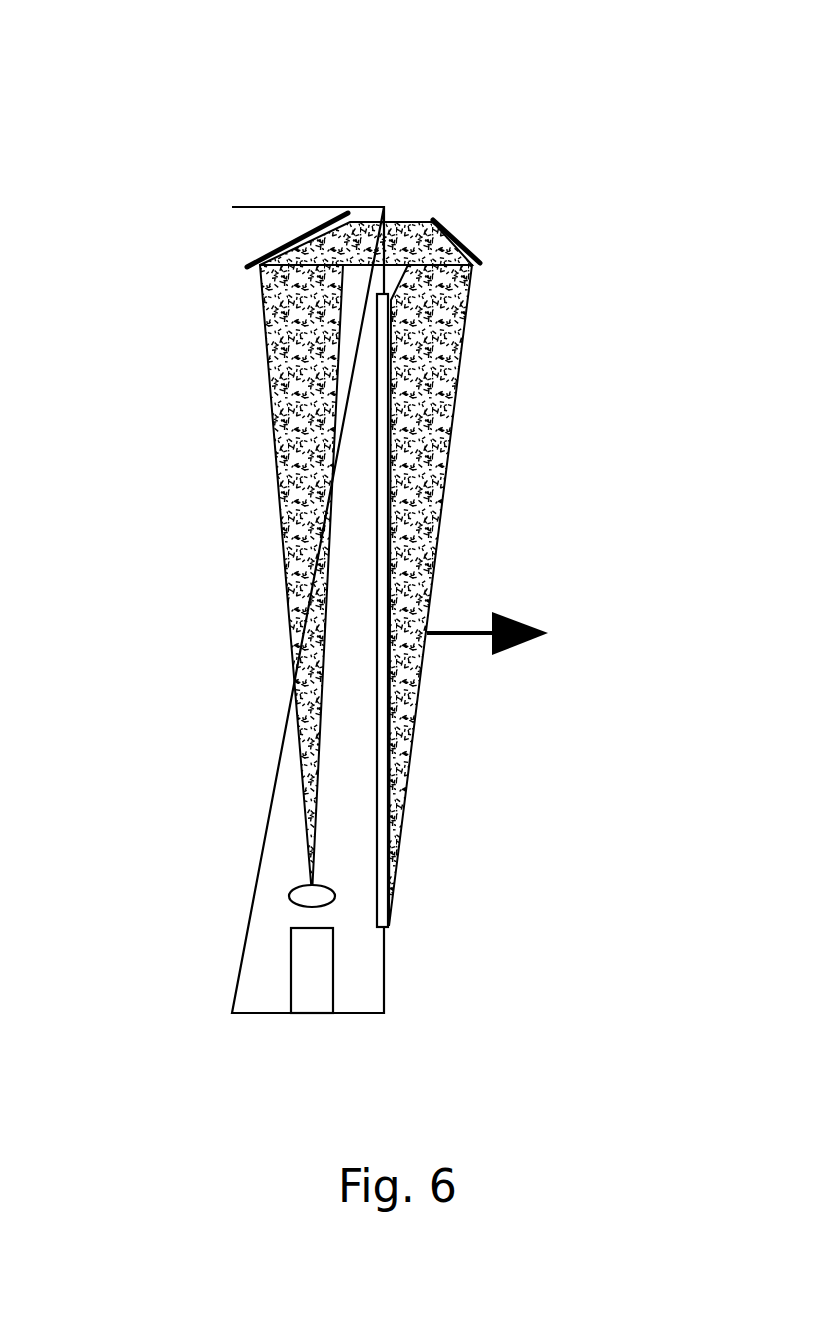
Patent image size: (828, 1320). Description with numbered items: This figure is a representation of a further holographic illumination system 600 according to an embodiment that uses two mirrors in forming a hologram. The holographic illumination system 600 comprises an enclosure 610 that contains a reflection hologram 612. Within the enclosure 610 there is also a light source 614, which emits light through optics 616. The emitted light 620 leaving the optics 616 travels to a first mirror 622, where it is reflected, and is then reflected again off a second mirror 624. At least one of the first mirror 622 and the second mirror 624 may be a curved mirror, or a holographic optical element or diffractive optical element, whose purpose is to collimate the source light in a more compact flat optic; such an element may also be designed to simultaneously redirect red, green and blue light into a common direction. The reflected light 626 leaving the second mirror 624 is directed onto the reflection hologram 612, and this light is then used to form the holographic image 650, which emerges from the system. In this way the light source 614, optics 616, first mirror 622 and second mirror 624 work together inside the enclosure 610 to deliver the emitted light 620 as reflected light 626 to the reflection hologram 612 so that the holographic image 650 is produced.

The holographic illumination system 600 is at (466, 92).
The enclosure 610 is at (231, 325).
The reflection hologram 612 is at (386, 497).
The light source 614 is at (315, 971).
The optics 616 is at (288, 897).
The emitted light 620 is at (297, 672).
The first mirror 622 is at (322, 227).
The second mirror 624 is at (465, 240).
The reflected light 626 is at (433, 352).
The holographic image 650 is at (528, 646).